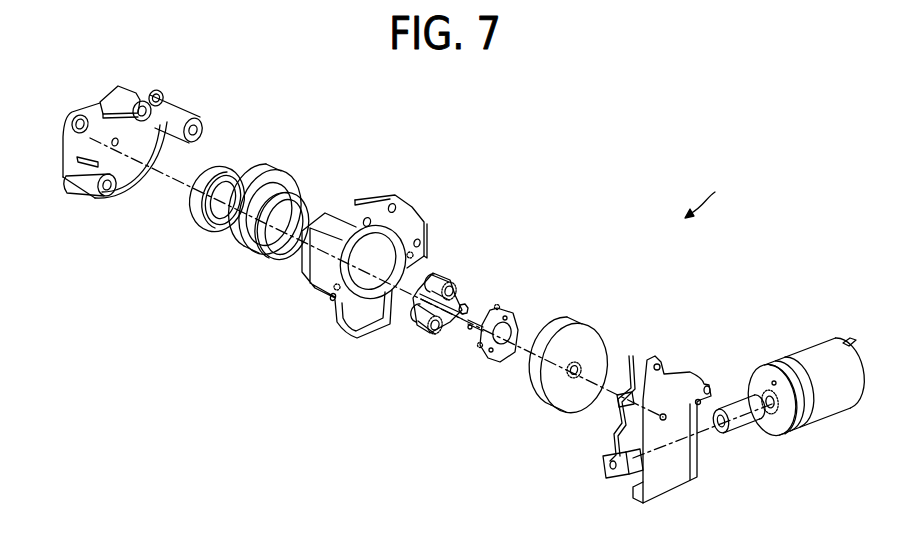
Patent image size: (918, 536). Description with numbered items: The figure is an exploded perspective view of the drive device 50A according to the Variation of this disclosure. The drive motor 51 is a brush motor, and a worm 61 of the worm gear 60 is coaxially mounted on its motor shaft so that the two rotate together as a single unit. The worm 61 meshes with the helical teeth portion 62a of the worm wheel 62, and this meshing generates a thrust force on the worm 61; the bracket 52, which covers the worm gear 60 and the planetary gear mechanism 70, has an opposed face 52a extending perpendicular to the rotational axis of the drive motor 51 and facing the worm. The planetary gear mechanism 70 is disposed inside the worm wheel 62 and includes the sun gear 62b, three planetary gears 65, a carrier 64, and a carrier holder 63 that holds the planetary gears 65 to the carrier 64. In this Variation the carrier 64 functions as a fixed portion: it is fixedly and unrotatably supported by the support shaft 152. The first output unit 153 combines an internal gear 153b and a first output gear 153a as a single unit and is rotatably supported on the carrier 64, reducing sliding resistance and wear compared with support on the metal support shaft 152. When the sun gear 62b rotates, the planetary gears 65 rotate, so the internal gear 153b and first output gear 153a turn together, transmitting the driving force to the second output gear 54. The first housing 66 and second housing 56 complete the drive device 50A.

The drive device 50A is at (719, 199).
The drive motor 51 is at (801, 347).
The bracket 52 is at (662, 434).
The opposed face 52a is at (628, 482).
The second output gear 54 is at (205, 228).
The second housing 56 is at (180, 104).
The worm gear 60 is at (629, 345).
The worm 61 is at (750, 412).
The worm wheel 62 is at (572, 365).
The helical teeth portion 62a is at (603, 330).
The sun gear 62b is at (573, 362).
The carrier holder 63 is at (503, 308).
The carrier 64 is at (413, 332).
The planetary gears 65 is at (447, 288).
The first housing 66 is at (405, 207).
The planetary gear mechanism 70 is at (449, 349).
The support shaft 152 is at (626, 386).
The first output unit 153 is at (253, 265).
The first output gear 153a is at (232, 260).
The internal gear 153b is at (287, 260).